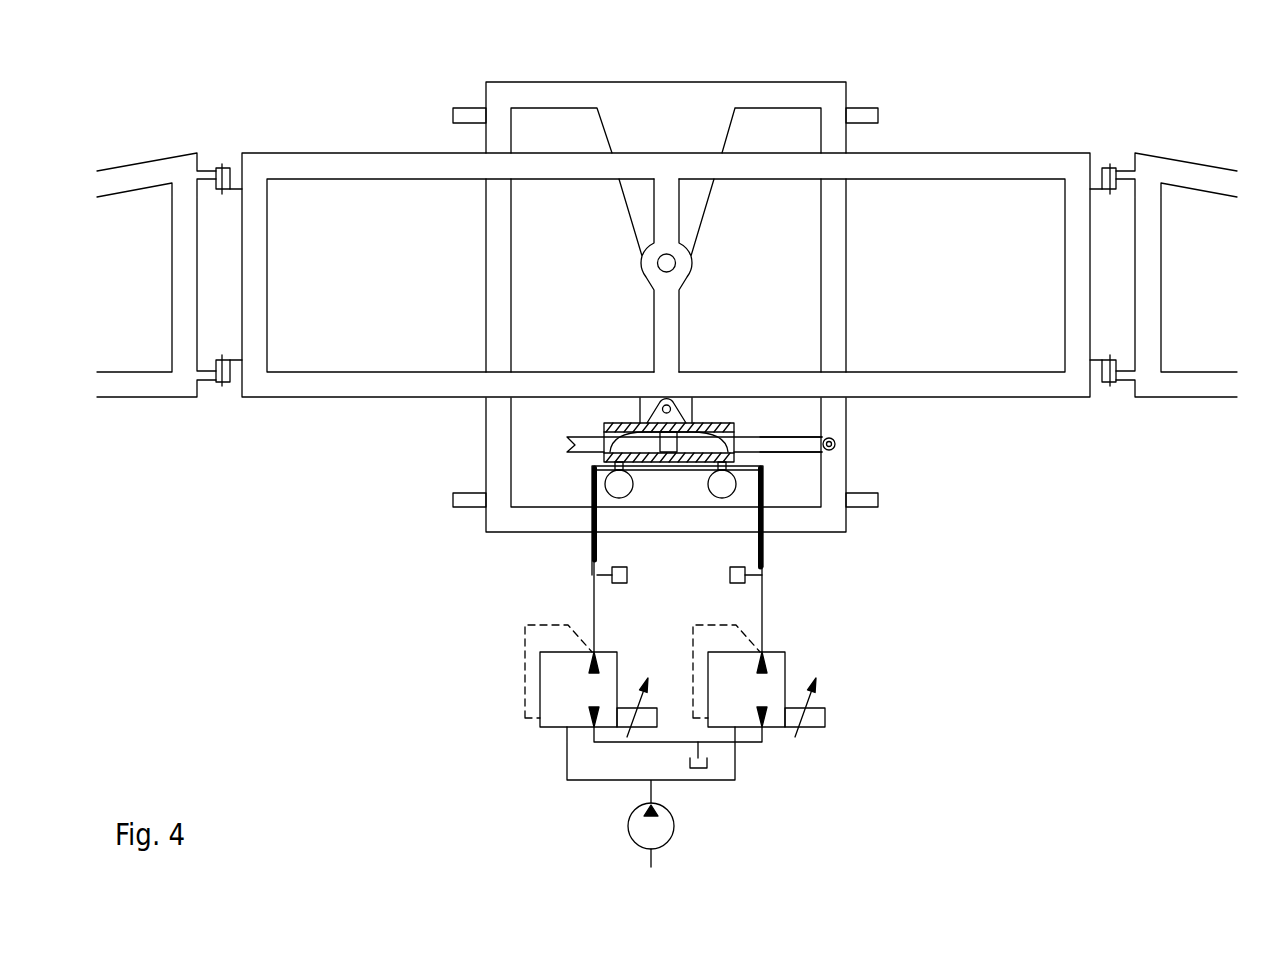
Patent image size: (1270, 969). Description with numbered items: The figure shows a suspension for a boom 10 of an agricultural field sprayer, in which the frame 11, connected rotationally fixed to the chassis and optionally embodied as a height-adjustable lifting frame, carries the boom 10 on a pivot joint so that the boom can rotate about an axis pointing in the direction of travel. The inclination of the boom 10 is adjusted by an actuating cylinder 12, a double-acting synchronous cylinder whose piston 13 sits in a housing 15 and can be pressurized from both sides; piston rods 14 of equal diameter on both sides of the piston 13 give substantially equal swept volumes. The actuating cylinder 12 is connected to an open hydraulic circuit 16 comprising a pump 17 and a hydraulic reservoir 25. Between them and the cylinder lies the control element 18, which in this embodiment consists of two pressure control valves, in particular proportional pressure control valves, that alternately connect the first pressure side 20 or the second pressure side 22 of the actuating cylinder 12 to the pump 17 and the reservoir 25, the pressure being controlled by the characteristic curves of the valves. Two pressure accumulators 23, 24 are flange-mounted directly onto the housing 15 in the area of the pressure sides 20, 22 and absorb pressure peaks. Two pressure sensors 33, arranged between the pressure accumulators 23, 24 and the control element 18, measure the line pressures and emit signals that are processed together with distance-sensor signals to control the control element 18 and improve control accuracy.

The boom 10 is at (926, 167).
The frame 11 is at (828, 98).
The actuating cylinder 12 is at (708, 423).
The piston 13 is at (670, 443).
The piston rod 14 is at (786, 445).
The housing 15 is at (633, 423).
The hydraulic circuit 16 is at (812, 586).
The pump 17 is at (655, 828).
The control element 18 is at (491, 665).
The first pressure side 20 is at (609, 425).
The second pressure side 22 is at (740, 455).
The pressure accumulator 23 is at (620, 483).
The pressure accumulator 24 is at (723, 485).
The hydraulic reservoir 25 is at (707, 768).
The pressure sensor 33 is at (730, 578).